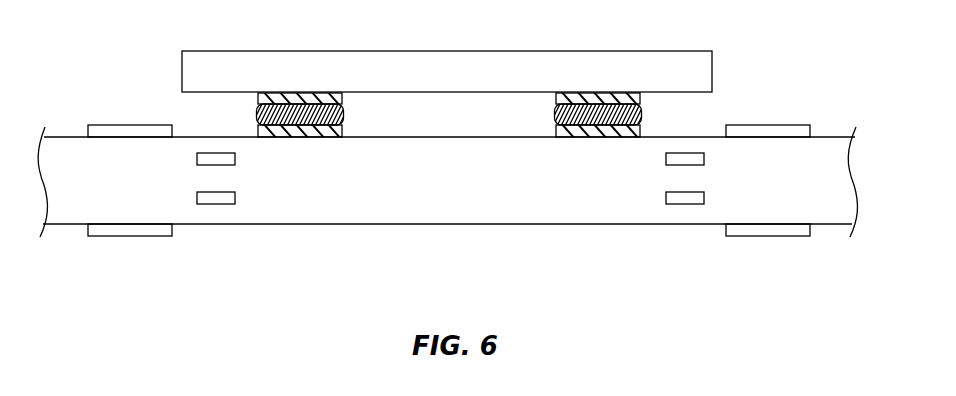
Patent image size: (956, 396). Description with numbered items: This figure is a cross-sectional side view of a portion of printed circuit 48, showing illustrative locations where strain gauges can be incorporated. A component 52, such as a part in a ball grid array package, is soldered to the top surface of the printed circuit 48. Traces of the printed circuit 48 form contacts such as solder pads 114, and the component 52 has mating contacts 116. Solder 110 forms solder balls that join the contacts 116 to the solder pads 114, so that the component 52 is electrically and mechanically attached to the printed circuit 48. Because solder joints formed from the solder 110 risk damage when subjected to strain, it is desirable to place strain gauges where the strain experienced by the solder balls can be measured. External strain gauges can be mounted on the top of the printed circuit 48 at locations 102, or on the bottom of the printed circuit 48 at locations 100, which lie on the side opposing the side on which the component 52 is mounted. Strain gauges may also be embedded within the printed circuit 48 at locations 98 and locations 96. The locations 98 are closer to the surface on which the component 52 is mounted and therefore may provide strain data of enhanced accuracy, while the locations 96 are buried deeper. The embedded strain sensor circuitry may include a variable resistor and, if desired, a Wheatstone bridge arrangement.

The printed circuit 48 is at (72, 212).
The component 52 is at (489, 60).
The locations 96 is at (218, 199).
The locations 98 is at (197, 158).
The locations 100 is at (133, 238).
The locations 102 is at (128, 125).
The solder 110 is at (344, 112).
The solder pads 114 is at (298, 140).
The contacts 116 is at (311, 100).